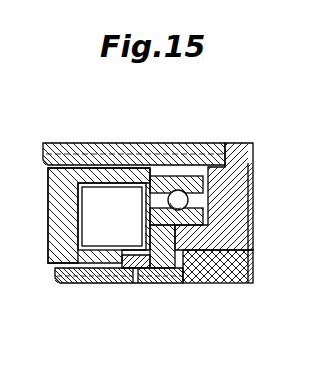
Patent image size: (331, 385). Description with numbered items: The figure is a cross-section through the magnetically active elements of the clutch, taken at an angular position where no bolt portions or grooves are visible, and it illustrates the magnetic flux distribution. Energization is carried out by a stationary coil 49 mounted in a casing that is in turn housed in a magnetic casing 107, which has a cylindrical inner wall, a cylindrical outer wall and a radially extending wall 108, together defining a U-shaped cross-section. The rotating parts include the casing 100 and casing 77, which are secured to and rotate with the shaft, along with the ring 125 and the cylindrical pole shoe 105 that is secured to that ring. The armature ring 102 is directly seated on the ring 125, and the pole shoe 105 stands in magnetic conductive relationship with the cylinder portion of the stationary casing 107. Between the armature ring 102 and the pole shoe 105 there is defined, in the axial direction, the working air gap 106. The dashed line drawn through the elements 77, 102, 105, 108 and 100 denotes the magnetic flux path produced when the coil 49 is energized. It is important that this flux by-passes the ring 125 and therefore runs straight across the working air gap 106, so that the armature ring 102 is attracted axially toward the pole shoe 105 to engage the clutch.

The casing 100 is at (58, 146).
The casing 77 is at (233, 183).
The magnetic casing 107 is at (46, 185).
The radially extending wall 108 is at (52, 210).
The stationary coil 49 is at (126, 228).
The cylindrical pole shoe 105 is at (77, 285).
The air gap 106 is at (136, 289).
The ring 125 is at (183, 284).
The armature ring 102 is at (242, 284).